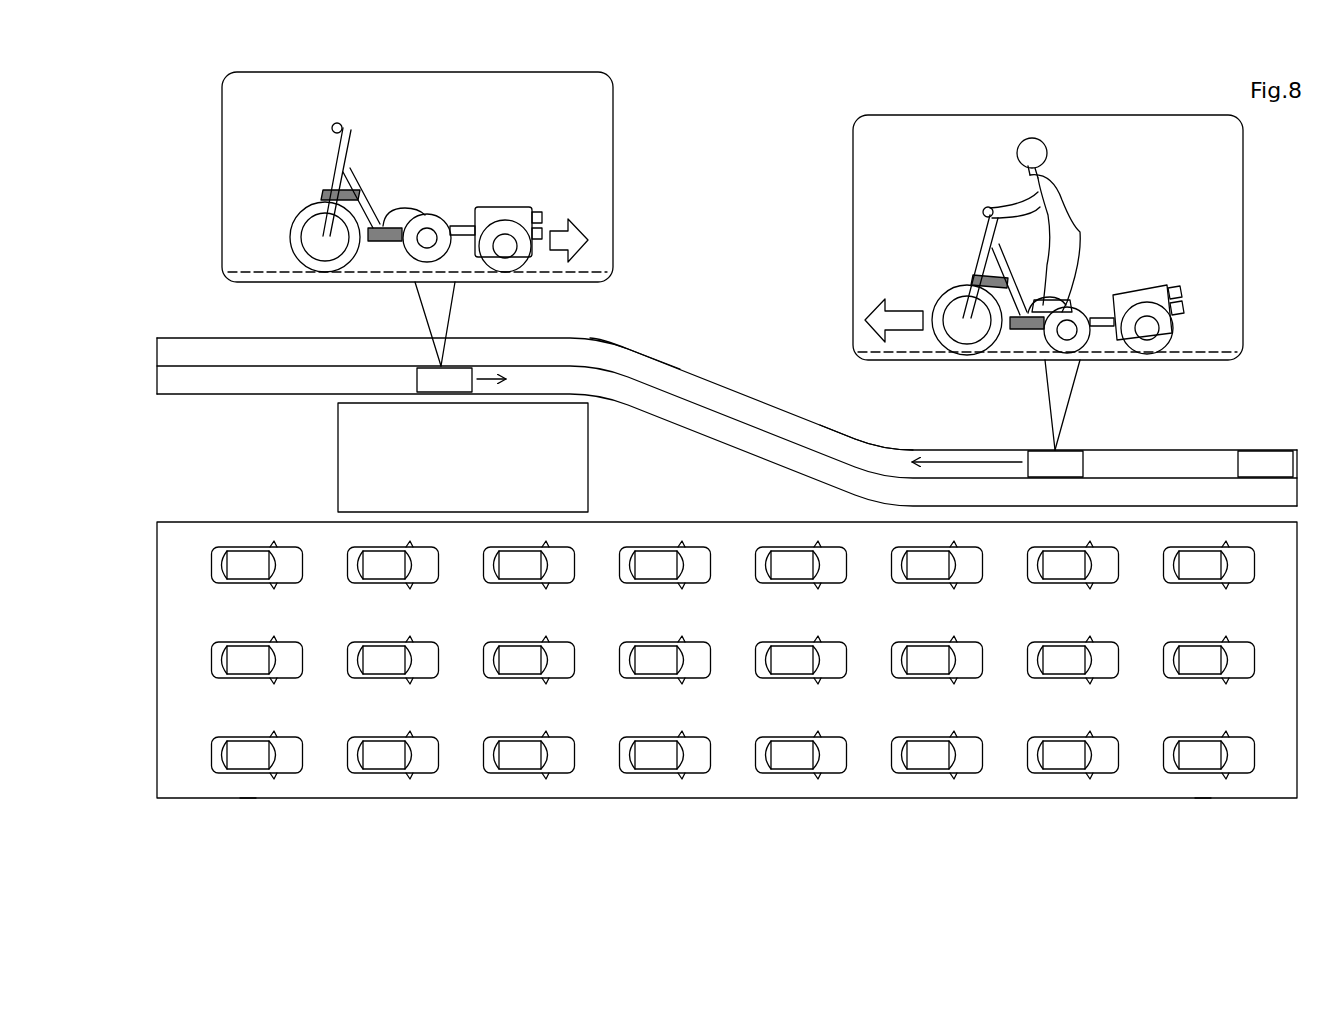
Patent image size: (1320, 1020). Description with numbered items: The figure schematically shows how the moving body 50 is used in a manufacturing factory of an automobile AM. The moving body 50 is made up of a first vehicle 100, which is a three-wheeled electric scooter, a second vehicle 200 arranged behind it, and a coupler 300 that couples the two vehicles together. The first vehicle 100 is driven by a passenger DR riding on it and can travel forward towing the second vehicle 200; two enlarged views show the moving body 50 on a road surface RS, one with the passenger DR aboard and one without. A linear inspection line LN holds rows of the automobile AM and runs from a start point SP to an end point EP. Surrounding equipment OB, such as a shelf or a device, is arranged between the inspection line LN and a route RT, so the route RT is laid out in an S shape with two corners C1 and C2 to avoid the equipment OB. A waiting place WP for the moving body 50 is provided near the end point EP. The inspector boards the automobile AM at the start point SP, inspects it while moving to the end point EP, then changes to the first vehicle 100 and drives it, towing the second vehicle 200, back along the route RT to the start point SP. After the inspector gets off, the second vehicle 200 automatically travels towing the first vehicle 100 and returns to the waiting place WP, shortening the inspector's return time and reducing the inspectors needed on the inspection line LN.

The moving body 50 is at (746, 285).
The first vehicle 100 is at (345, 170).
The second vehicle 200 is at (497, 205).
The coupler 300 is at (455, 222).
The road surface RS is at (270, 270).
The passenger DR is at (1068, 198).
The route RT is at (707, 380).
The corner C1 is at (613, 330).
The corner C2 is at (894, 436).
The surrounding equipment OB is at (338, 462).
The waiting place WP is at (1218, 450).
The inspection line LN is at (710, 800).
The automobile AM is at (212, 561).
The start point SP is at (248, 805).
The end point EP is at (1204, 805).